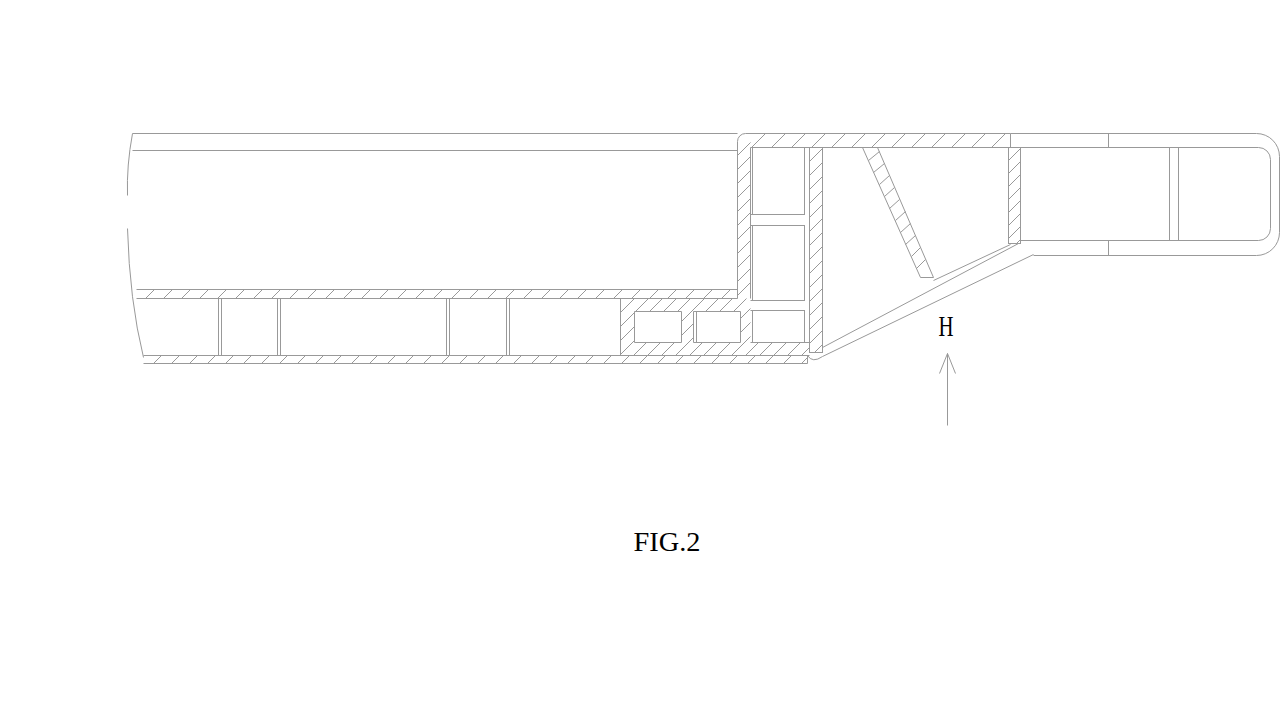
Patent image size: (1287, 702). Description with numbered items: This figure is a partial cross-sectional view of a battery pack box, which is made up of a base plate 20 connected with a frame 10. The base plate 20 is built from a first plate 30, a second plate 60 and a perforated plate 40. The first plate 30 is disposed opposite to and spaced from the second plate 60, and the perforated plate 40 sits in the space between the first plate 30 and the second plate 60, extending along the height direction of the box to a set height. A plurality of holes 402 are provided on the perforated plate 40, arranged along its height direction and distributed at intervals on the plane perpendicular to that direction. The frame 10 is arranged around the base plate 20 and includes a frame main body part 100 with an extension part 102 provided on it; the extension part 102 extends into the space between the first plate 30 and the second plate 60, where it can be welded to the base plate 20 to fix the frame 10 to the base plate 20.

The frame 10 is at (1012, 130).
The base plate 20 is at (150, 370).
The first plate 30 is at (738, 358).
The perforated plate 40 is at (218, 318).
The hole 402 is at (248, 318).
The second plate 60 is at (398, 290).
The frame main body part 100 is at (1000, 252).
The extension part 102 is at (630, 348).